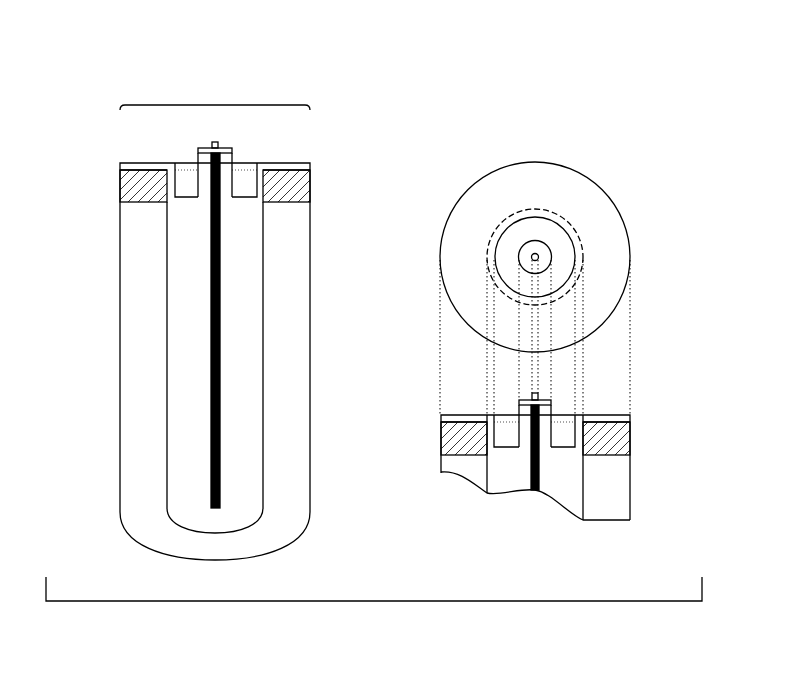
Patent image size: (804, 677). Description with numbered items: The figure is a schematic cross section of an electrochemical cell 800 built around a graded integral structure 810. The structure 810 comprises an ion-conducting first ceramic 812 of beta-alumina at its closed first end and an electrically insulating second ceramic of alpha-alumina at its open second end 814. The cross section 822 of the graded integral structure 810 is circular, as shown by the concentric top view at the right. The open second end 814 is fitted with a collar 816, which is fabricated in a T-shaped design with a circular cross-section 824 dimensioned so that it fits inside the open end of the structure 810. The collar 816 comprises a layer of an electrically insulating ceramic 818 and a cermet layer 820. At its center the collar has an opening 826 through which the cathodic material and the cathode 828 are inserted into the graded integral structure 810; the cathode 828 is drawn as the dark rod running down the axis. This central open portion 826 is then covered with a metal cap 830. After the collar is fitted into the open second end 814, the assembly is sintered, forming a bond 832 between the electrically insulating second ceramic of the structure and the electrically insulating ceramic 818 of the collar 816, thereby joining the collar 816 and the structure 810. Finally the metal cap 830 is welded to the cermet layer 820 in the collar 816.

The electrochemical cell 800 is at (634, 82).
The graded integral structure 810 is at (114, 339).
The ion-conducting first ceramic 812 is at (128, 423).
The electrically insulating second ceramic at open second end 814 is at (120, 198).
The collar 816 is at (215, 94).
The layer of electrically insulating ceramic 818 is at (120, 167).
The cermet layer 820 is at (182, 175).
The cross section of the graded integral structure 822 is at (455, 162).
The circular cross-section of the collar 824 is at (642, 455).
The opening 826 is at (538, 257).
The cathode 828 is at (212, 487).
The metal cap 830 is at (203, 149).
The bond 832 is at (167, 198).